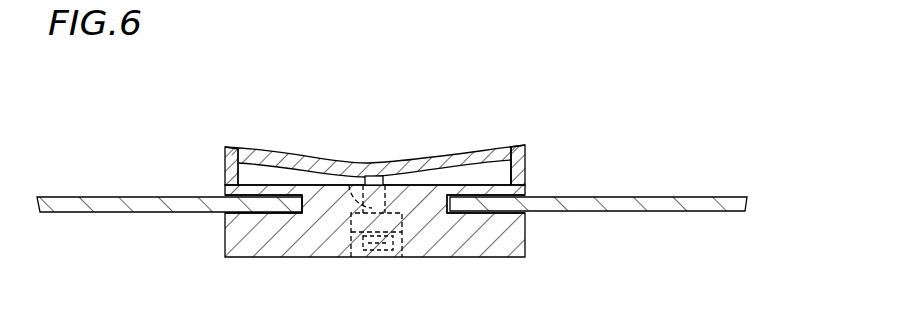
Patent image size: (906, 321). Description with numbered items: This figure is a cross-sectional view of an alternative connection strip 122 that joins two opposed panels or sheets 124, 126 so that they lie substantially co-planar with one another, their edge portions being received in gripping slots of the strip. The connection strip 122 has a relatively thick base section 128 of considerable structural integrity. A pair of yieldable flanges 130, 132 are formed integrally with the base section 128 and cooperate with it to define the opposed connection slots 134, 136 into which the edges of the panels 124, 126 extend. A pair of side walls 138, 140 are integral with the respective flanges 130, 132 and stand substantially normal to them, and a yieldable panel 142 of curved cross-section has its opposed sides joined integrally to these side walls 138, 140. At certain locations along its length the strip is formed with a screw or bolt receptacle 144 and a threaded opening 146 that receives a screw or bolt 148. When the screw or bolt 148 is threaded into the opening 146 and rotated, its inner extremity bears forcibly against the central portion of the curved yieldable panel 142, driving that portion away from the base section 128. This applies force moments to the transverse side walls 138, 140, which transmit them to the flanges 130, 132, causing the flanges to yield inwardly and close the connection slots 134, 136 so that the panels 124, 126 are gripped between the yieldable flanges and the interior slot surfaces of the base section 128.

The connection strip 122 is at (563, 86).
The panel or sheet 124 is at (71, 196).
The panel or sheet 126 is at (690, 212).
The base section 128 is at (287, 247).
The yieldable flange 130 is at (272, 185).
The yieldable flange 132 is at (497, 160).
The connection slot 134 is at (224, 214).
The connection slot 136 is at (527, 213).
The side wall 138 is at (225, 162).
The side wall 140 is at (528, 164).
The yieldable panel 142 is at (452, 155).
The screw or bolt receptacle 144 is at (397, 250).
The threaded opening 146 is at (346, 163).
The screw or bolt 148 is at (366, 245).